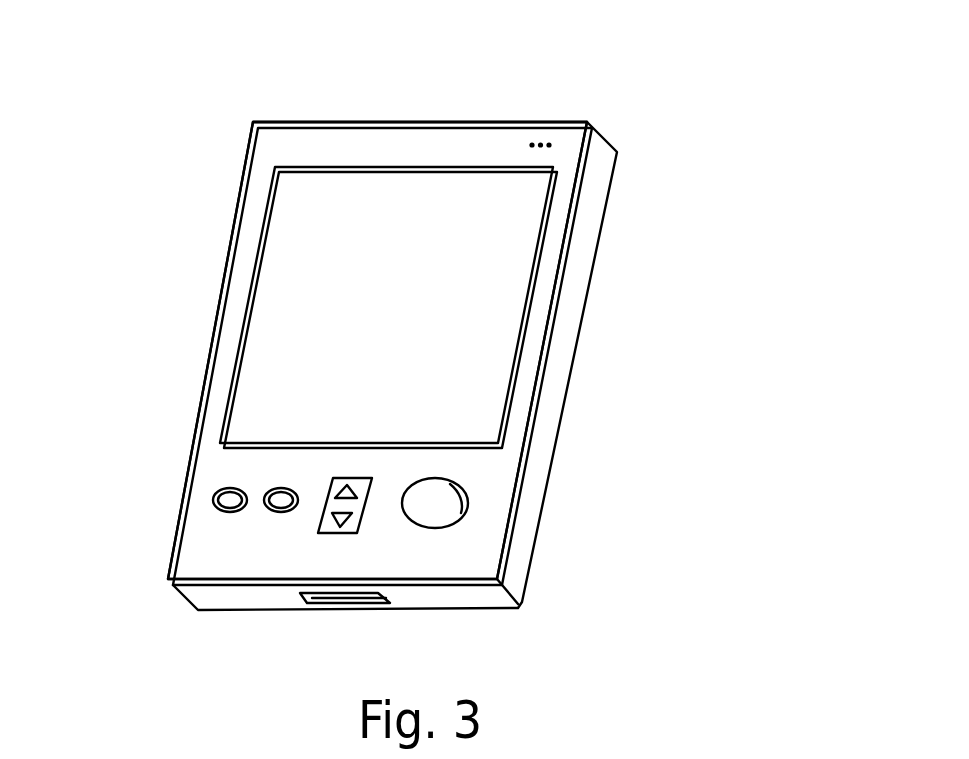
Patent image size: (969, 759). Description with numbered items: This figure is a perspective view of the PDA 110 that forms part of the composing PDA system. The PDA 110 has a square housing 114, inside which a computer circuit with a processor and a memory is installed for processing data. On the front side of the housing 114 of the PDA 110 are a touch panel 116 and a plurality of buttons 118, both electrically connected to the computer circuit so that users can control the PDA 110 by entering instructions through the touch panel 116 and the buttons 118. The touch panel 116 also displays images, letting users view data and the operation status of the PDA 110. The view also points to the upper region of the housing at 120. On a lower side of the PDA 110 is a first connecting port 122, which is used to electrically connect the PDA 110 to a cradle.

The PDA 110 is at (645, 98).
The housing 114 is at (242, 268).
The touch panel 116 is at (437, 285).
The buttons 118 is at (437, 508).
The top edge of housing 120 is at (463, 120).
The first connecting port 122 is at (340, 598).